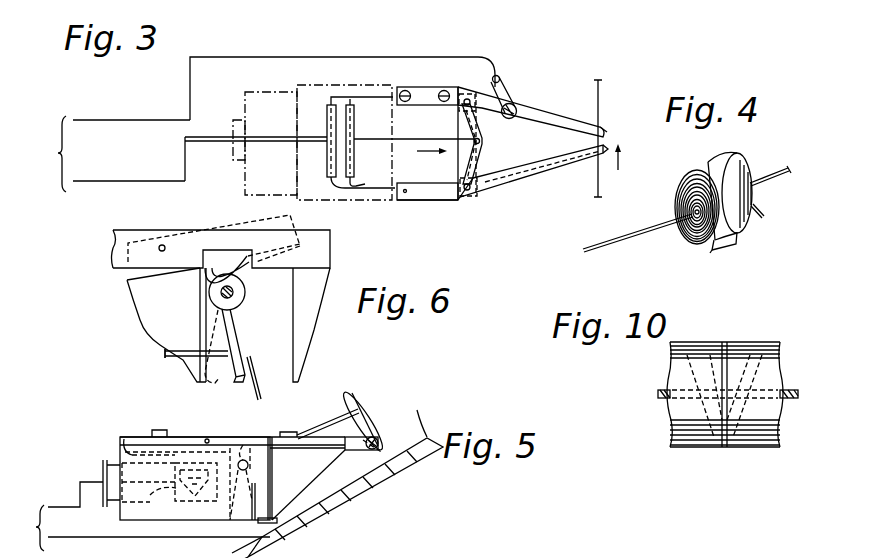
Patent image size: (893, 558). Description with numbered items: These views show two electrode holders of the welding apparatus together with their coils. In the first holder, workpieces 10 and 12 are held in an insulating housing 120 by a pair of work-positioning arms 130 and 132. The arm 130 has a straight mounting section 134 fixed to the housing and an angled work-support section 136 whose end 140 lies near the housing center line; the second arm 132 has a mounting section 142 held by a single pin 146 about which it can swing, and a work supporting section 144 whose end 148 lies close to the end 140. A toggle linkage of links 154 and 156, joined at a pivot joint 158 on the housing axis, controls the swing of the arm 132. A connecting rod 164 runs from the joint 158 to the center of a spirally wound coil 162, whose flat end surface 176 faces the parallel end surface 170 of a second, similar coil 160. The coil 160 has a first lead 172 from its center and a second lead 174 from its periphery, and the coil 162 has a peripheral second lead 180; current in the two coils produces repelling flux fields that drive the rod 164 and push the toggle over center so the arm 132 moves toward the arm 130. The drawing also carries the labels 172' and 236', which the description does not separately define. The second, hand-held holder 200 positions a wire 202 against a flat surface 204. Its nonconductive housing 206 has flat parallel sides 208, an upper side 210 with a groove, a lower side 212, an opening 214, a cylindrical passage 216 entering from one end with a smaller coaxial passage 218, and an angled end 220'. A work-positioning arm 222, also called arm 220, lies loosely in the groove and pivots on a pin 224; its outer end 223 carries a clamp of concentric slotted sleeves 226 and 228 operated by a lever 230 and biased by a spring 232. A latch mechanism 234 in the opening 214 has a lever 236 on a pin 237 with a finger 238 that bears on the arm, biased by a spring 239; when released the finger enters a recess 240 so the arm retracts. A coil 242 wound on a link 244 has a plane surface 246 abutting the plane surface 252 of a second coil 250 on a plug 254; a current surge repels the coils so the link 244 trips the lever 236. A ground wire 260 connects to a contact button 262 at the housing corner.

In FIG. 3, the workpiece 10 is at (601, 105).
In FIG. 3, the workpiece 12 is at (604, 170).
In FIG. 3, the housing 120 is at (314, 80).
In FIG. 3, the work-positioning arm 130 is at (530, 100).
In FIG. 3, the second arm 132 is at (498, 193).
In FIG. 3, the mounting section 134 is at (417, 90).
In FIG. 3, the work-support section 136 is at (547, 120).
In FIG. 3, the end of arm 140 is at (607, 133).
In FIG. 3, the mounting section 142 is at (440, 190).
In FIG. 3, the work supporting section 144 is at (540, 166).
In FIG. 3, the pin 146 is at (406, 194).
In FIG. 3, the end of arm 148 is at (612, 151).
In FIG. 3, the link 154 is at (465, 120).
In FIG. 3, the link 156 is at (481, 155).
In FIG. 3, the pivot joint 158 is at (480, 141).
In FIG. 3, the second coil 160 is at (328, 165).
In FIG. 4, the second coil 160 is at (668, 201).
In FIG. 3, the coil 162 is at (328, 120).
In FIG. 4, the coil 162 is at (735, 148).
In FIG. 3, the connecting rod 164 is at (384, 138).
In FIG. 4, the connecting rod 164 is at (787, 176).
In FIG. 3, the end surface 170 is at (352, 115).
In FIG. 3, the first lead 172 is at (256, 150).
In FIG. 4, the first lead 172 is at (638, 233).
In FIG. 4, the shaft stub 172' is at (784, 205).
In FIG. 4, the second lead 174 is at (716, 253).
In FIG. 3, the end surface 176 is at (351, 172).
In FIG. 4, the end surface 176 is at (735, 172).
In FIG. 4, the second lead 180 is at (740, 241).
In FIG. 5, the holder or fixture 200 is at (92, 455).
In FIG. 5, the wire 202 is at (362, 403).
In FIG. 5, the flat surface 204 is at (417, 410).
In FIG. 5, the housing 206 is at (122, 445).
In FIG. 5, the sides 208 is at (118, 512).
In FIG. 5, the upper side 210 is at (200, 434).
In FIG. 5, the lower side 212 is at (180, 518).
In FIG. 6, the opening 214 is at (295, 345).
In FIG. 5, the opening 214 is at (273, 466).
In FIG. 5, the cylindrical passage 216 is at (137, 520).
In FIG. 6, the small passage 218 is at (180, 351).
In FIG. 6, the arm 220 is at (214, 233).
In FIG. 5, the end of housing 220' is at (337, 498).
In FIG. 6, the work-positioning arm 222 is at (148, 230).
In FIG. 5, the outer end of arm 223 is at (365, 450).
In FIG. 6, the pin 224 is at (164, 245).
In FIG. 5, the pin 224 is at (208, 438).
In FIG. 5, the sleeve 226 is at (378, 436).
In FIG. 5, the sleeve 228 is at (380, 440).
In FIG. 5, the lever 230 is at (365, 388).
In FIG. 5, the spring 232 is at (342, 420).
In FIG. 6, the latch mechanism 234 is at (170, 302).
In FIG. 6, the lever 236 is at (236, 346).
In FIG. 5, the arm 236' is at (221, 502).
In FIG. 6, the pin 237 is at (235, 292).
In FIG. 6, the finger 238 is at (240, 250).
In FIG. 6, the spring 239 is at (256, 385).
In FIG. 5, the spring 239 is at (250, 520).
In FIG. 6, the recess 240 is at (253, 250).
In FIG. 5, the recess 240 is at (240, 445).
In FIG. 10, the coil 242 is at (745, 450).
In FIG. 5, the coil 242 is at (180, 535).
In FIG. 6, the link 244 is at (172, 360).
In FIG. 10, the link 244 is at (794, 389).
In FIG. 10, the plane surface 246 is at (733, 372).
In FIG. 10, the second coil 250 is at (699, 452).
In FIG. 5, the second coil 250 is at (142, 492).
In FIG. 10, the plane surface 252 is at (727, 345).
In FIG. 10, the plug 254 is at (683, 372).
In FIG. 5, the ground wire 260 is at (150, 538).
In FIG. 5, the contact button 262 is at (275, 523).